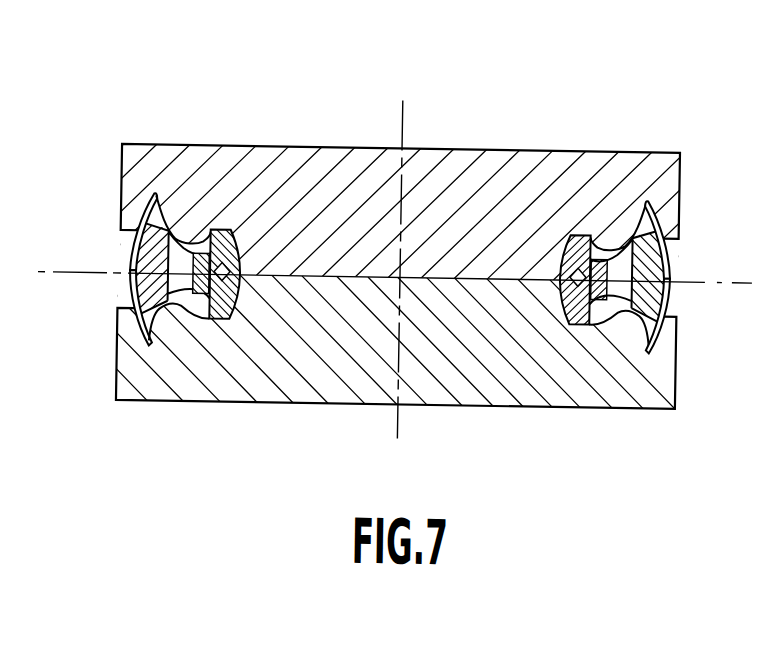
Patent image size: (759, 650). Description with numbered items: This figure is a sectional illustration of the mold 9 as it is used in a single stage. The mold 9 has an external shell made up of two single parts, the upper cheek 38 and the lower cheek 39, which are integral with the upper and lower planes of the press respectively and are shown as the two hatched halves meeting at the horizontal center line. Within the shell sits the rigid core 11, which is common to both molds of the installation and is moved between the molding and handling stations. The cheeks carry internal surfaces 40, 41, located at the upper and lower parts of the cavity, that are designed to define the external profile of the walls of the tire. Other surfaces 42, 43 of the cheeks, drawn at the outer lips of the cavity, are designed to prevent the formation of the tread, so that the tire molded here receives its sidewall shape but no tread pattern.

The mold 9 is at (418, 120).
The rigid core 11 is at (132, 287).
The upper cheek 38 is at (528, 157).
The lower cheek 39 is at (333, 384).
The internal surface 40 is at (626, 235).
The internal surface 41 is at (631, 300).
The tread-preventing surface 42 is at (655, 210).
The tread-preventing surface 43 is at (656, 332).